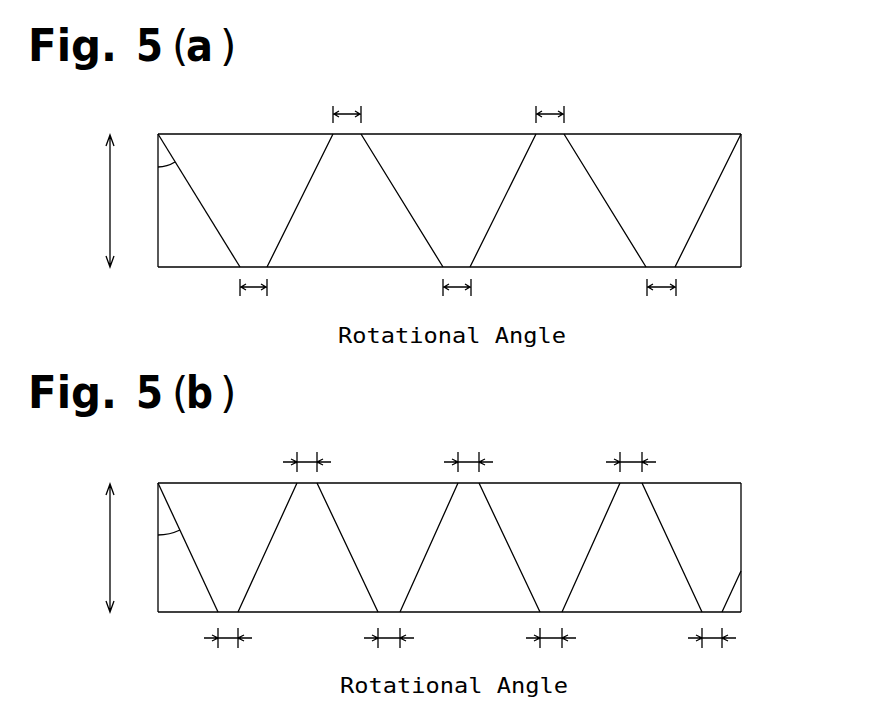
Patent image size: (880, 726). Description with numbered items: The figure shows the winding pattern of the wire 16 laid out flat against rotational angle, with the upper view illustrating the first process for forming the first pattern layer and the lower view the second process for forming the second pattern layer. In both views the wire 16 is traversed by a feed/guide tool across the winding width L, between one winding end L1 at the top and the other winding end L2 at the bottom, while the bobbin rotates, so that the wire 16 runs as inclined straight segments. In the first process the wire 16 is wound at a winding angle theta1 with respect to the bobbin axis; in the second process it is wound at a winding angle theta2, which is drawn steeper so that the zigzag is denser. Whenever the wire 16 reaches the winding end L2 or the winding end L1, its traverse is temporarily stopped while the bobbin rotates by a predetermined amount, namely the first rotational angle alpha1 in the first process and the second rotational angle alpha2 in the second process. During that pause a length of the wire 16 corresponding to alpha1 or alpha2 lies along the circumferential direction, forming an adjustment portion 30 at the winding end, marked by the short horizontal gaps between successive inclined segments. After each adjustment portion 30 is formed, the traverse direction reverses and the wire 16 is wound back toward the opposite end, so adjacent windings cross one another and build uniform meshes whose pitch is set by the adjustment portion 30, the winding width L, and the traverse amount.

In FIG. 5a, the wire 16 is at (195, 192).
In FIG. 5b, the wire 16 is at (172, 510).
In FIG. 5a, the adjustment portion 30 is at (353, 134).
In FIG. 5b, the adjustment portion 30 is at (477, 485).
In FIG. 5a, the winding width L is at (100, 201).
In FIG. 5b, the winding width L is at (100, 548).
In FIG. 5a, the winding end L1 is at (433, 133).
In FIG. 5b, the winding end L1 is at (433, 481).
In FIG. 5a, the winding end L2 is at (433, 265).
In FIG. 5b, the winding end L2 is at (433, 610).
In FIG. 5a, the winding angle theta1 is at (172, 182).
In FIG. 5b, the winding angle theta2 is at (173, 552).
In FIG. 5a, the first rotational angle alpha1 is at (458, 202).
In FIG. 5b, the second rotational angle alpha2 is at (470, 552).